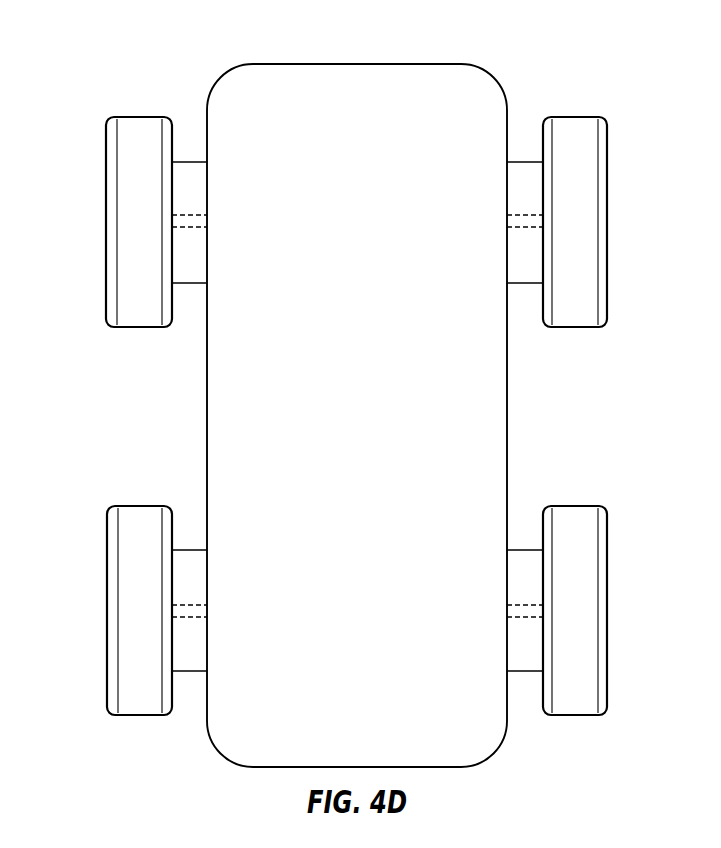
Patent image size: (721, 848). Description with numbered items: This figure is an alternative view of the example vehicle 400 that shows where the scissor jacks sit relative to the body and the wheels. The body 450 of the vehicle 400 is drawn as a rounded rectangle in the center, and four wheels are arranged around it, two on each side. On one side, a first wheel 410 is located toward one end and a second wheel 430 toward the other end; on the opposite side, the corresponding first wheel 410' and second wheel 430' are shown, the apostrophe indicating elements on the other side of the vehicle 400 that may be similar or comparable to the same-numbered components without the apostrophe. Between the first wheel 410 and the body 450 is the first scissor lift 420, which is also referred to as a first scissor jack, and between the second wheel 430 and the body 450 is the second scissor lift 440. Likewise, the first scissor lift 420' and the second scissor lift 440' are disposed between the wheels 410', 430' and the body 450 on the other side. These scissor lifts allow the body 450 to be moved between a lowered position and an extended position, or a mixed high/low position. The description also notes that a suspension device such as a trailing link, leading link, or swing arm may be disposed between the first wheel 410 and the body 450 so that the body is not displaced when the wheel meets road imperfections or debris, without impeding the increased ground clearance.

The vehicle 400 is at (636, 63).
The first wheel 410 is at (95, 222).
The first wheel 410' is at (621, 222).
The first scissor lift 420 is at (172, 152).
The first scissor lift 420' is at (544, 152).
The second wheel 430 is at (95, 610).
The second wheel 430' is at (621, 610).
The second scissor lift 440 is at (172, 540).
The second scissor lift 440' is at (544, 540).
The body 450 is at (389, 58).